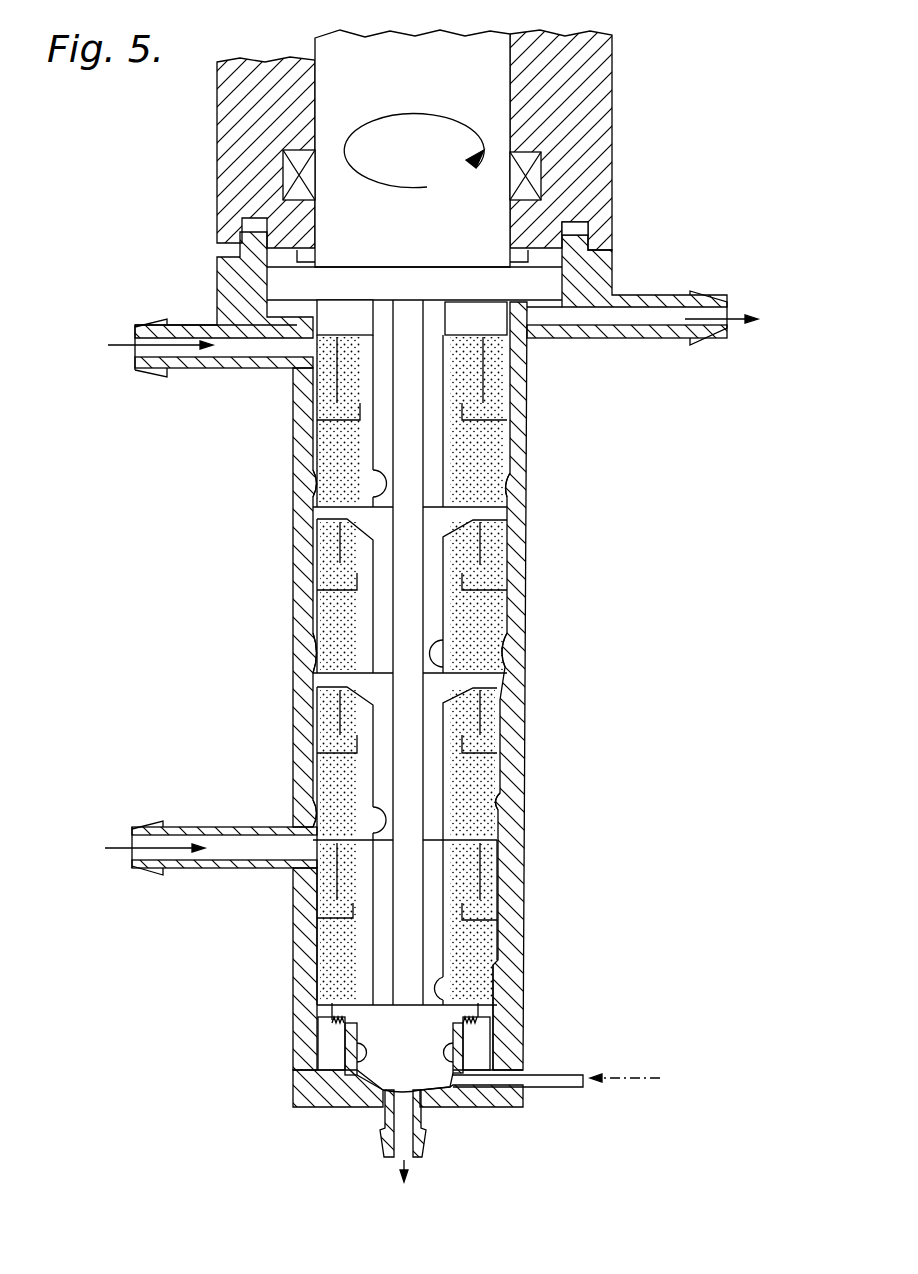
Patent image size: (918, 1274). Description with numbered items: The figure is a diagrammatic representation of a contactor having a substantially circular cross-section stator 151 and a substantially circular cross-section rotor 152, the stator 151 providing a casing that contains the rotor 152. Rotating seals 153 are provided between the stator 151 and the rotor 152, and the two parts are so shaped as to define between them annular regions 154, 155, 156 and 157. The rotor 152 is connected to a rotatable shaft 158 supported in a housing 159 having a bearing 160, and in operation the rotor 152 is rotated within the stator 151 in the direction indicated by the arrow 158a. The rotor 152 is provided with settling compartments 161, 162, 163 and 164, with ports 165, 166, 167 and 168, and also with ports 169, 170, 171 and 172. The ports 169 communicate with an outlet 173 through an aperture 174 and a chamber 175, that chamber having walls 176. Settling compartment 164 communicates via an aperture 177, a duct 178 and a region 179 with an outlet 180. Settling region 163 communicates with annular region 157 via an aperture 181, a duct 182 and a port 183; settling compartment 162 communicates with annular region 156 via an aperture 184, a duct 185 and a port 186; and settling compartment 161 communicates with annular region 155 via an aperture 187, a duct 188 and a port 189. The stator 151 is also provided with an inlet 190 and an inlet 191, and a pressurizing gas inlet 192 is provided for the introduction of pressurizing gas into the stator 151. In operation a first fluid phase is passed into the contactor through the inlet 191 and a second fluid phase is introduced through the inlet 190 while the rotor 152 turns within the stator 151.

The stator 151 is at (303, 642).
The rotor 152 is at (510, 907).
The rotating seals 153 is at (313, 432).
The annular region 154 is at (490, 898).
The annular region 155 is at (510, 733).
The annular region 156 is at (495, 572).
The annular region 157 is at (502, 393).
The rotatable shaft 158 is at (436, 82).
The arrow 158a is at (382, 182).
The housing 159 is at (612, 72).
The bearing 160 is at (541, 178).
The settling compartment 161 is at (500, 995).
The settling compartment 162 is at (520, 838).
The settling compartment 163 is at (503, 646).
The settling compartment 164 is at (480, 482).
The port 165 is at (330, 915).
The port 166 is at (463, 740).
The port 167 is at (335, 580).
The port 168 is at (337, 404).
The ports 169 is at (327, 1027).
The port 170 is at (320, 880).
The port 171 is at (313, 668).
The port 172 is at (313, 493).
The outlet 173 is at (423, 1150).
The aperture 174 is at (340, 1042).
The chamber 175 is at (403, 1060).
The walls 176 is at (320, 1060).
The aperture 177 is at (378, 483).
The duct 178 is at (373, 440).
The region 179 is at (547, 285).
The outlet 180 is at (718, 297).
The aperture 181 is at (500, 662).
The duct 182 is at (492, 513).
The port 183 is at (473, 347).
The aperture 184 is at (378, 812).
The duct 185 is at (380, 688).
The port 186 is at (317, 519).
The aperture 187 is at (487, 1035).
The duct 188 is at (433, 785).
The port 189 is at (457, 685).
The inlet 190 is at (143, 868).
The inlet 191 is at (135, 330).
The pressurizing gas inlet 192 is at (590, 1089).